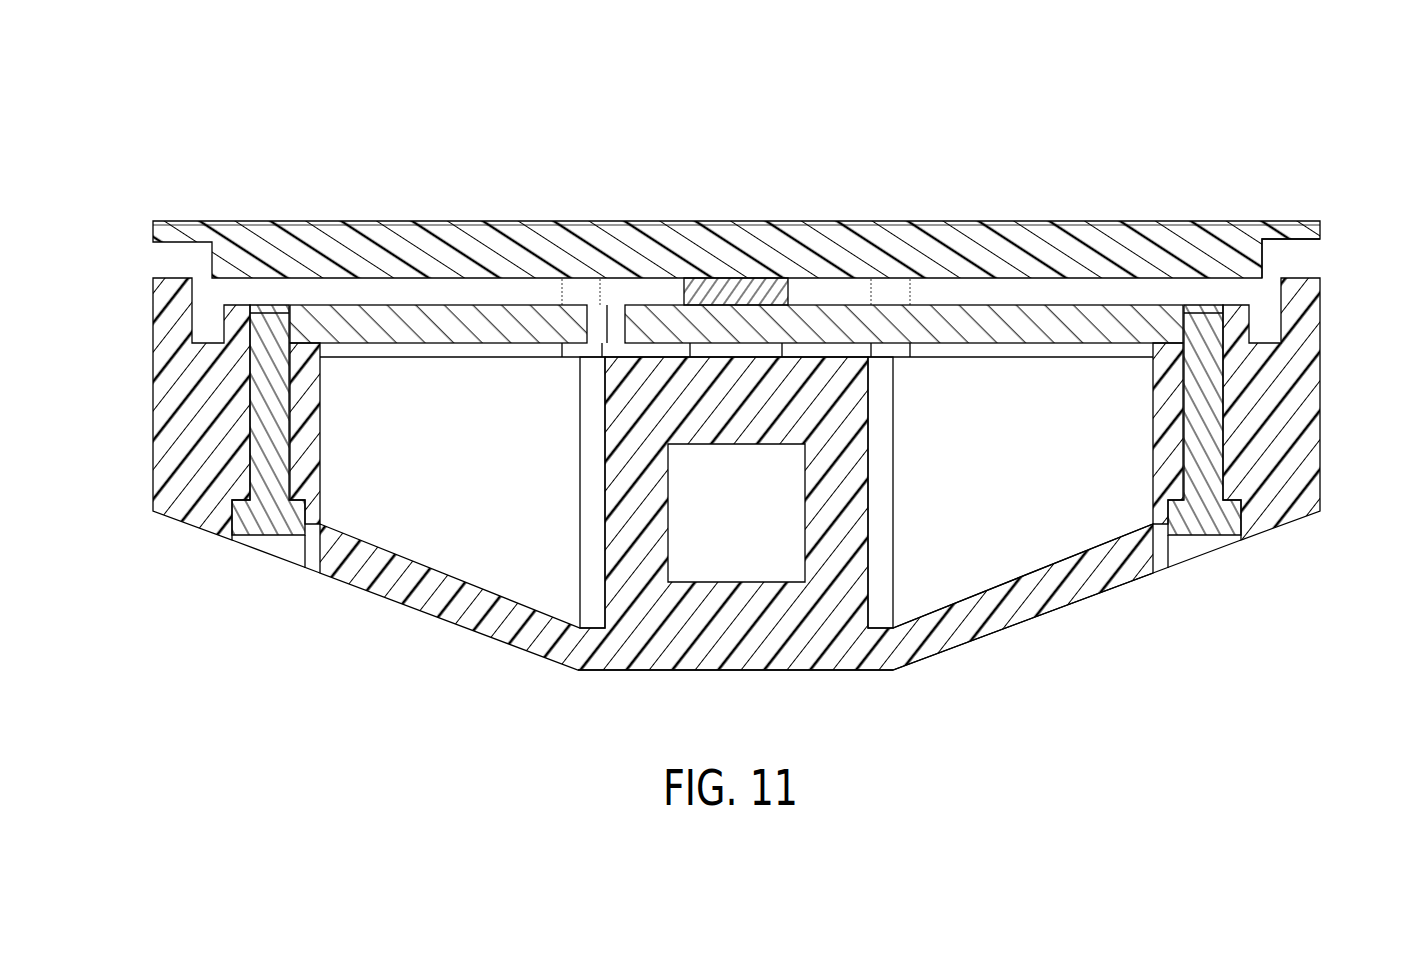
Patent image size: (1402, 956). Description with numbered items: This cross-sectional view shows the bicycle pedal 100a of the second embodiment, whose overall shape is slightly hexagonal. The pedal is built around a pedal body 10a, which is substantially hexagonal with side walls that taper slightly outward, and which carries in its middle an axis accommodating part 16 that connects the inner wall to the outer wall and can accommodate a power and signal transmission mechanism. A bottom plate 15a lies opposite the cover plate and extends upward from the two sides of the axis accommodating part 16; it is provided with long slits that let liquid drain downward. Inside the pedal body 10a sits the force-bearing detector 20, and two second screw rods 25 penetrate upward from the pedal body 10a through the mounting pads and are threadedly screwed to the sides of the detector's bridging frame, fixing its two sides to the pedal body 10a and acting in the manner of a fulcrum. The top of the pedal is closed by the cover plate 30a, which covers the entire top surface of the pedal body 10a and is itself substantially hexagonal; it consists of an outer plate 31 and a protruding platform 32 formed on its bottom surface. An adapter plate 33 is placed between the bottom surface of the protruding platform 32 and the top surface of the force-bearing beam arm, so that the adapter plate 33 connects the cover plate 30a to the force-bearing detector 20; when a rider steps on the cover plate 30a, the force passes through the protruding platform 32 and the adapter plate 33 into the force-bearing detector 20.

The bicycle pedal 100a is at (94, 133).
The cover plate 30a is at (1328, 229).
The outer plate 31 is at (1286, 232).
The protruding platform 32 is at (1250, 254).
The adapter plate 33 is at (731, 292).
The force-bearing detector 20 is at (430, 296).
The second screw rods 25 is at (278, 520).
The pedal body 10a is at (1328, 427).
The bottom plate 15a is at (1090, 600).
The axis accommodating part 16 is at (738, 656).